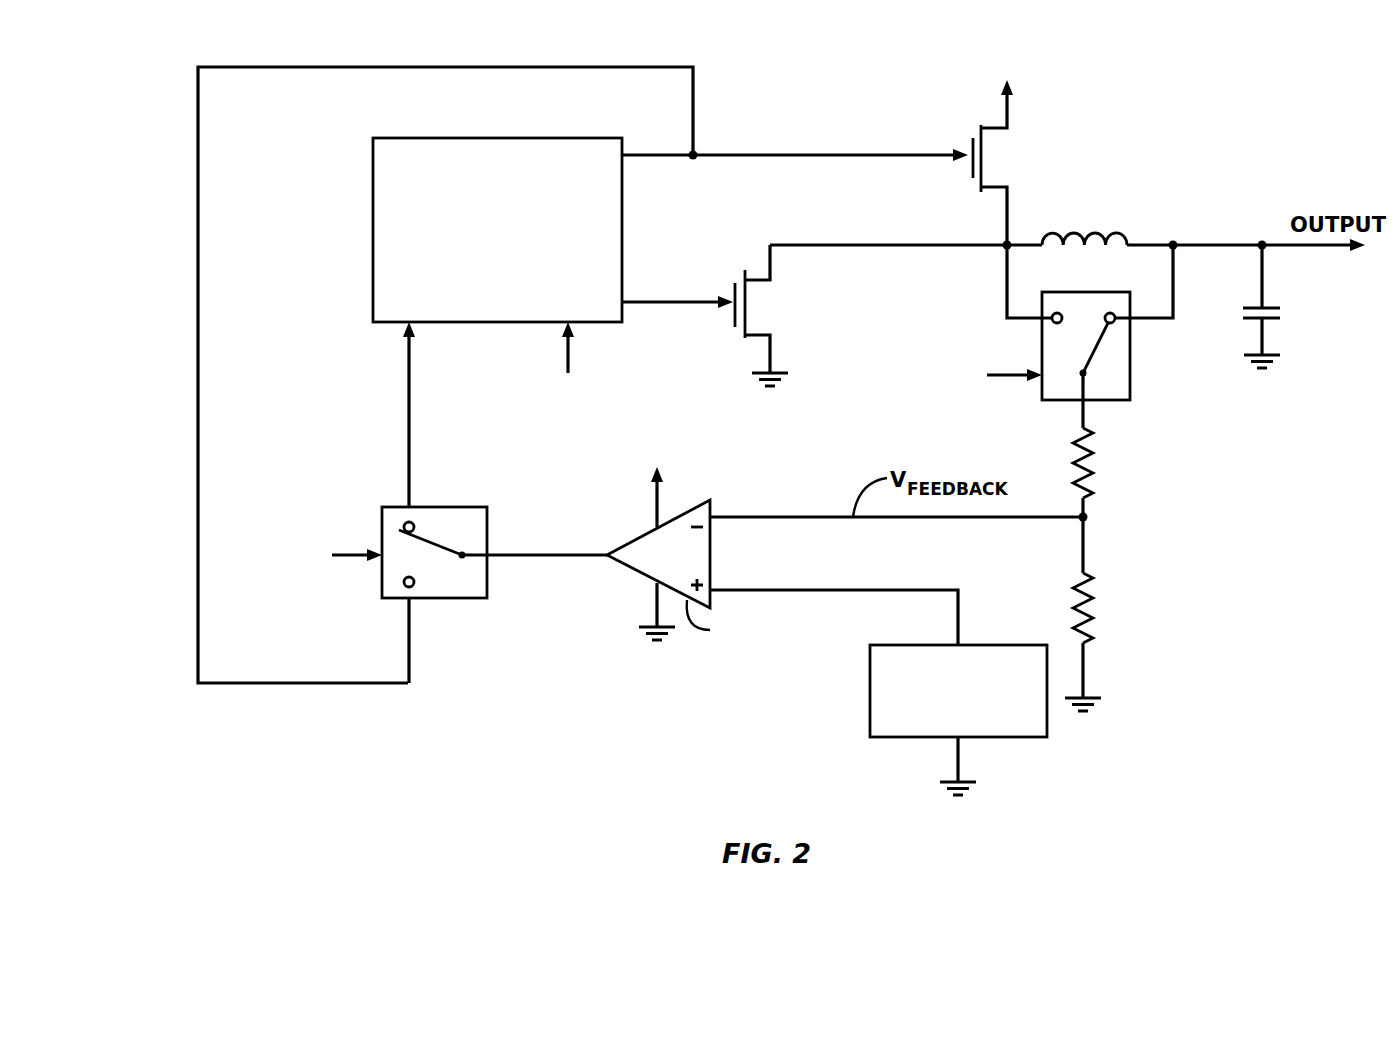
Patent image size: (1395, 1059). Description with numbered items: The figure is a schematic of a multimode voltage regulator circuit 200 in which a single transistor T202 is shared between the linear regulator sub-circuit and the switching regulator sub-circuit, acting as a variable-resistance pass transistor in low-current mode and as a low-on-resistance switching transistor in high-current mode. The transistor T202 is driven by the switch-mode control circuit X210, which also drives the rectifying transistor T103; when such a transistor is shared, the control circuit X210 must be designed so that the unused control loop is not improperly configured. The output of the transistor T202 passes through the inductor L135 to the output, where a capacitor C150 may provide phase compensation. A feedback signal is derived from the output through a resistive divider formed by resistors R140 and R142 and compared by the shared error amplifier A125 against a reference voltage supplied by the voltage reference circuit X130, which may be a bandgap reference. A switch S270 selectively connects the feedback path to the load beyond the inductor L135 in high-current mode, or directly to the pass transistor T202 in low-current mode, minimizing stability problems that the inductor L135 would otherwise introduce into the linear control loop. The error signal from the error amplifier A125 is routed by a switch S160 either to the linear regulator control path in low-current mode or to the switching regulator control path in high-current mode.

The multimode voltage regulator circuit 200 is at (134, 645).
The switch-mode control circuit X210 is at (670, 281).
The transistor T202 is at (1094, 147).
The rectifying transistor T103 is at (785, 315).
The inductor L135 is at (1084, 226).
The switch S270 is at (1130, 368).
The capacitor C150 is at (1295, 306).
The resistor R140 is at (1117, 500).
The resistor R142 is at (1113, 642).
The error amplifier A125 is at (725, 551).
The voltage reference circuit X130 is at (958, 720).
The switch S160 is at (435, 598).